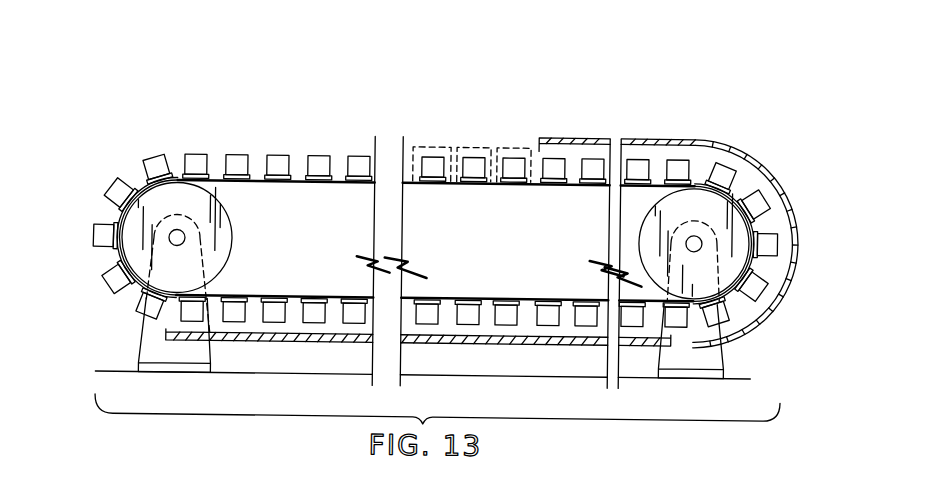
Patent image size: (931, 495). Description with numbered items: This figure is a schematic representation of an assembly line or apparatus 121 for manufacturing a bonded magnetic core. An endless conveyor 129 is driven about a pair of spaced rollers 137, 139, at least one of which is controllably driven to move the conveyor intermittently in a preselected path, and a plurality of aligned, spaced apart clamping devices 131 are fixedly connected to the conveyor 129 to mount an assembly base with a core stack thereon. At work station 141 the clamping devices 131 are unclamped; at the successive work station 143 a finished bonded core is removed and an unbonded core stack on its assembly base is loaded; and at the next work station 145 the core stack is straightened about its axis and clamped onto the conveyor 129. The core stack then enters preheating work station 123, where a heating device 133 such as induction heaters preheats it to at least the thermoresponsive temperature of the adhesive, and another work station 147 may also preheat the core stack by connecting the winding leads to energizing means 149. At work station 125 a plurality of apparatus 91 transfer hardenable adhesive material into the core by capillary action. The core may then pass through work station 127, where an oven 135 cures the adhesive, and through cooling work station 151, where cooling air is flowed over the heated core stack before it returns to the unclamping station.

The apparatus 91 is at (503, 142).
The apparatus 121 is at (195, 380).
The work station 123 is at (477, 140).
The work station 125 is at (517, 138).
The work station 127 is at (698, 133).
The endless conveyor 129 is at (223, 288).
The clamping devices 131 is at (237, 181).
The heating device 133 is at (460, 143).
The oven 135 is at (772, 165).
The roller 137 is at (165, 205).
The roller 139 is at (680, 209).
The work station 141 is at (195, 151).
The work station 143 is at (235, 151).
The work station 145 is at (282, 150).
The work station 147 is at (415, 143).
The means for energizing the winding means 149 is at (437, 141).
The work station 151 is at (295, 342).